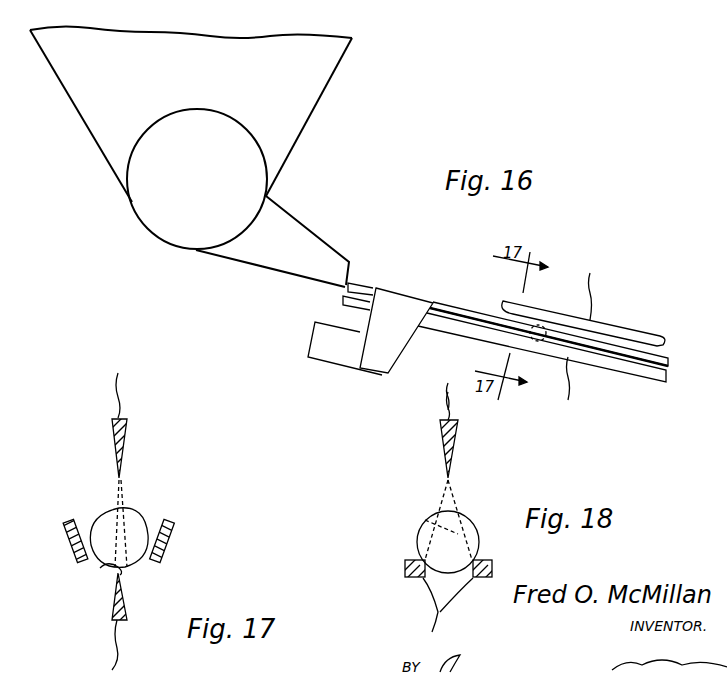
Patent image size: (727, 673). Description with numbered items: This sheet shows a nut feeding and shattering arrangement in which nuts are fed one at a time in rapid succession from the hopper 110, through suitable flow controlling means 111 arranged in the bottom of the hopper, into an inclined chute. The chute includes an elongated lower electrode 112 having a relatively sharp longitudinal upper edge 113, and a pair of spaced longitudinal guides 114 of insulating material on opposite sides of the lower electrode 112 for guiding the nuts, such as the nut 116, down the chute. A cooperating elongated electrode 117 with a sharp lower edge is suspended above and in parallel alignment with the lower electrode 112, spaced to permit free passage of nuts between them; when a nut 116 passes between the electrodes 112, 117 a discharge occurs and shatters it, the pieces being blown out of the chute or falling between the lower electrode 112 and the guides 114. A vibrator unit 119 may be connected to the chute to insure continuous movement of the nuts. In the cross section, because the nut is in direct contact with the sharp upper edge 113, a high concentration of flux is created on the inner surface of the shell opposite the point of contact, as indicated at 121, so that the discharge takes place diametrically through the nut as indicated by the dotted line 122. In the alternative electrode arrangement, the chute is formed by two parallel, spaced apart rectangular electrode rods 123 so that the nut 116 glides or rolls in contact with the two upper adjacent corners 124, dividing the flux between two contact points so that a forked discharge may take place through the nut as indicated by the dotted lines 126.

In FIG. 16, the hopper 110 is at (213, 81).
In FIG. 16, the flow controlling means 111 is at (163, 208).
In FIG. 16, the lower electrode 112 is at (604, 370).
In FIG. 17, the lower electrode 112 is at (112, 608).
In FIG. 17, the upper edge 113 is at (120, 571).
In FIG. 16, the guides 114 is at (450, 311).
In FIG. 17, the guides 114 is at (70, 540).
In FIG. 16, the nut 116 is at (542, 326).
In FIG. 17, the nut 116 is at (142, 525).
In FIG. 18, the nut 116 is at (472, 522).
In FIG. 16, the elongated electrode 117 is at (614, 328).
In FIG. 17, the elongated electrode 117 is at (127, 437).
In FIG. 18, the elongated electrode 117 is at (458, 448).
In FIG. 16, the vibrator unit 119 is at (322, 378).
In FIG. 17, the point of flux concentration 121 is at (91, 575).
In FIG. 17, the dotted line 122 is at (113, 497).
In FIG. 18, the rectangular electrode rods 123 is at (448, 605).
In FIG. 18, the upper adjacent corners 124 is at (423, 562).
In FIG. 18, the dotted lines 126 is at (440, 532).